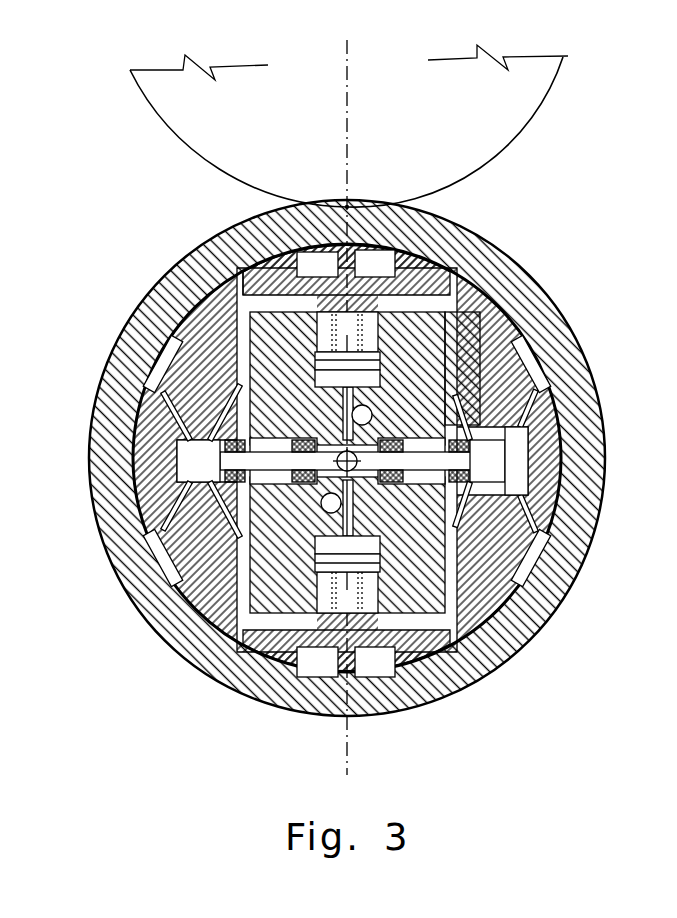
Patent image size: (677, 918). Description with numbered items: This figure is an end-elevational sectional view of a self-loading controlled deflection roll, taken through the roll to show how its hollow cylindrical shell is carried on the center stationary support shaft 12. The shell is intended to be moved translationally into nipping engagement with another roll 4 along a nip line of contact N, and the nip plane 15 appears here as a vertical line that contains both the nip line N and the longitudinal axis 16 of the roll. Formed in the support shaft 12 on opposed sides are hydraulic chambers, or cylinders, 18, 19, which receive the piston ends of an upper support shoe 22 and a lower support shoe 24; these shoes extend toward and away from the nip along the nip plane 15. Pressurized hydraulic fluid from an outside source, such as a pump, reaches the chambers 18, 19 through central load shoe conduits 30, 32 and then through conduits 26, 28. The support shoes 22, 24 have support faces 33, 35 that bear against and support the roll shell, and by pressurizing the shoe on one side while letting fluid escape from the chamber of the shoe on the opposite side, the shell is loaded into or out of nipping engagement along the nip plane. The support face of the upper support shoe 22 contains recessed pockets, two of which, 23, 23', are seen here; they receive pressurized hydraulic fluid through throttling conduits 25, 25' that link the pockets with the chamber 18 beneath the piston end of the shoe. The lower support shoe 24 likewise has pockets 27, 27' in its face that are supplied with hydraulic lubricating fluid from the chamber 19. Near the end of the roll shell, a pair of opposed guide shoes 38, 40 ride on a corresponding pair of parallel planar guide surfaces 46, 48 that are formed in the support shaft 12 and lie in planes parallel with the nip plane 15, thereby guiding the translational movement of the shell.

The another roll 4 is at (533, 113).
The nip plane 15 is at (349, 127).
The nip line of contact N is at (350, 205).
The center stationary support shaft 12 is at (262, 612).
The longitudinal axis 16 is at (344, 450).
The hydraulic chamber 18 is at (318, 380).
The hydraulic chamber 19 is at (372, 545).
The upper support shoe 22 is at (410, 270).
The recessed pocket 23 is at (274, 233).
The recessed pocket 23' is at (437, 226).
The lower support shoe 24 is at (447, 697).
The throttling conduit 25 is at (347, 448).
The throttling conduit 25' is at (517, 326).
The conduit 26 is at (380, 383).
The pocket 27 is at (296, 700).
The pocket 27' is at (384, 703).
The conduit 28 is at (322, 545).
The central load shoe conduit 30 is at (374, 410).
The central load shoe conduit 32 is at (322, 510).
The support face 33 is at (265, 257).
The support face 35 is at (258, 676).
The guide shoe 38 is at (142, 310).
The guide shoe 40 is at (500, 340).
The planar guide surface 46 is at (172, 578).
The planar guide surface 48 is at (465, 598).